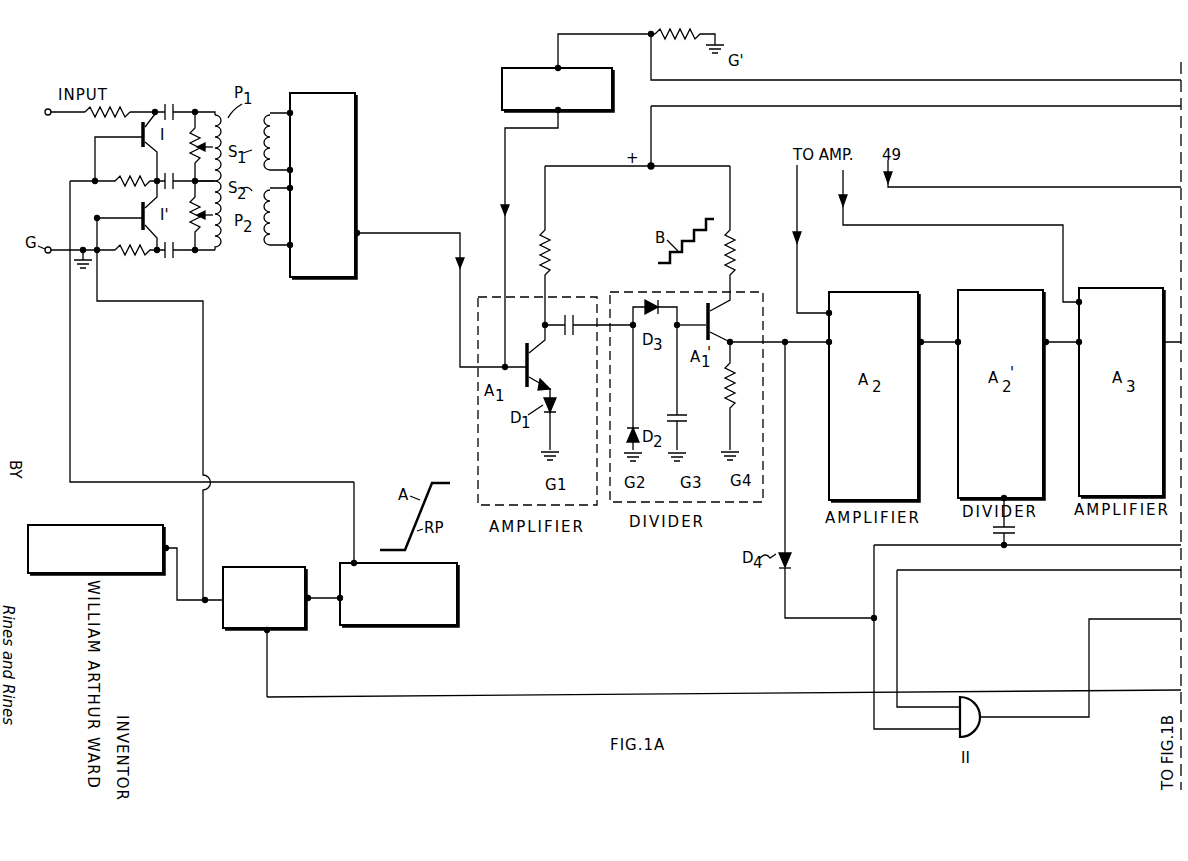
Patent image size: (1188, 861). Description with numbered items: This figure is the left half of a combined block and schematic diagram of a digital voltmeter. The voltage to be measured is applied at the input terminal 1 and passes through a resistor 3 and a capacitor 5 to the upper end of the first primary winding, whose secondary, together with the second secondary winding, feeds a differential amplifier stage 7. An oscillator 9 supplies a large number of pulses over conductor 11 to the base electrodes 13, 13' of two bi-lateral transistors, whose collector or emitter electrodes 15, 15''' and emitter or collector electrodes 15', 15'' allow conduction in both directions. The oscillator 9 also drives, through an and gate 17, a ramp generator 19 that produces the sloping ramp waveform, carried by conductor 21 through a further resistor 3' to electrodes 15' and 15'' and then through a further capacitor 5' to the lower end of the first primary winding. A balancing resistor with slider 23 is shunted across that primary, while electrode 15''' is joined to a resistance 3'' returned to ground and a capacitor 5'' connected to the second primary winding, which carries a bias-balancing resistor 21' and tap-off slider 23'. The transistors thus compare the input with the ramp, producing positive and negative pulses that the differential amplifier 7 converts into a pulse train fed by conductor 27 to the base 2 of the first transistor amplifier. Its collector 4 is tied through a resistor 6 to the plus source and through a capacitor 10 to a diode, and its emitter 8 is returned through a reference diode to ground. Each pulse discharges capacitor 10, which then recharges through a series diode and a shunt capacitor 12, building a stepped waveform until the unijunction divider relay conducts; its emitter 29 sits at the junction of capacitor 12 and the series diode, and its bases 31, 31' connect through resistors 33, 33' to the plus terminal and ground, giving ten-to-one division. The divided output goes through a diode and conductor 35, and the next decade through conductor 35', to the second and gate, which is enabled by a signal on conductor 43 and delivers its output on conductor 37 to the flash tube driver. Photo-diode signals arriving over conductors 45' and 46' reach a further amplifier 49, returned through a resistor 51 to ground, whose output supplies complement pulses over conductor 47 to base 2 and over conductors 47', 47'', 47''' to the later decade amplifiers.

The input terminal 1 is at (45, 113).
The base 2 is at (518, 350).
The resistor 3 is at (111, 97).
The resistor 3' is at (129, 169).
The resistance 3'' is at (140, 265).
The collector 4 is at (537, 347).
The capacitor 5 is at (176, 95).
The capacitor 5' is at (190, 170).
The capacitor 5'' is at (190, 262).
The resistor 6 is at (556, 256).
The differential amplifier stage 7 is at (303, 93).
The emitter 8 is at (550, 385).
The oscillator 9 is at (141, 525).
The capacitor 10 is at (577, 340).
The conductor 11 is at (94, 160).
The shunt capacitor 12 is at (688, 420).
The base electrode 13 is at (106, 151).
The base electrode 13' is at (118, 210).
The collector (or emitter) electrode 15 is at (150, 115).
The emitter (or collector) electrode 15' is at (142, 161).
The emitter (or collector) electrode 15'' is at (137, 205).
The collector (or emitter) electrode 15''' is at (153, 257).
The and gate 17 is at (267, 567).
The ramp generator 19 is at (461, 602).
The conductor 21 is at (212, 280).
The bias-balancing resistor 21' is at (206, 235).
The slider 23 is at (214, 107).
The tap-off slider 23' is at (225, 243).
The conductor 27 is at (458, 290).
The emitter 29 is at (706, 312).
The base 31 is at (733, 303).
The base 31' is at (735, 330).
The resistor 33 is at (767, 396).
The resistor 33' is at (745, 229).
The conductor 35 is at (983, 535).
The conductor 35' is at (977, 522).
The conductor 37 is at (1096, 619).
The conductor 43 is at (1141, 570).
The conductor 45' is at (916, 136).
The conductor 46' is at (916, 57).
The conductor 47 is at (515, 240).
The conductor 47' is at (815, 240).
The conductor 47'' is at (960, 237).
The conductor 47''' is at (1032, 174).
The amplifier 49 is at (522, 68).
The resistor 51 is at (694, 30).